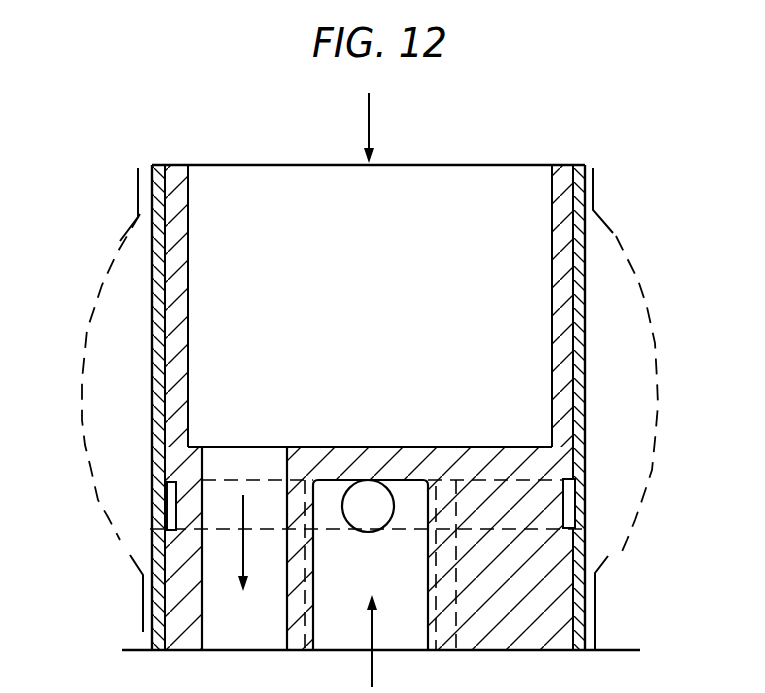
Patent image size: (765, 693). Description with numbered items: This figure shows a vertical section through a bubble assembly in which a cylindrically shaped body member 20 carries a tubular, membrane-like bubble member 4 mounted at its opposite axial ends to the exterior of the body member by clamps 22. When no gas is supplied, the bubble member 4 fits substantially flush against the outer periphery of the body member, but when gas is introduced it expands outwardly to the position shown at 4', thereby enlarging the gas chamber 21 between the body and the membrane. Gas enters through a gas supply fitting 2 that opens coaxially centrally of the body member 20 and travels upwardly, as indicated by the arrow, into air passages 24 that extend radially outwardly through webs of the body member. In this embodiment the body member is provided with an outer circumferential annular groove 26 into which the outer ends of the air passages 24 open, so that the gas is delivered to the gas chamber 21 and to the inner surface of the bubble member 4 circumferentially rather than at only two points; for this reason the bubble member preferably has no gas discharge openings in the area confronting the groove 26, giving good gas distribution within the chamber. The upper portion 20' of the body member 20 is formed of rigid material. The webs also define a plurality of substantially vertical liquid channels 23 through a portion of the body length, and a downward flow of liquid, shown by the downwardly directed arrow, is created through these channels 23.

The gas supply fitting 2 is at (403, 642).
The bubble member 4 is at (423, 407).
The expanded bubble member 4' is at (104, 407).
The body member 20 is at (434, 407).
The upper portion of body member 20' is at (115, 407).
The gas chamber 21 is at (630, 398).
The clamps 22 is at (143, 618).
The liquid channels 23 is at (208, 545).
The air passages 24 is at (331, 477).
The outer circumferential annular groove 26 is at (585, 490).